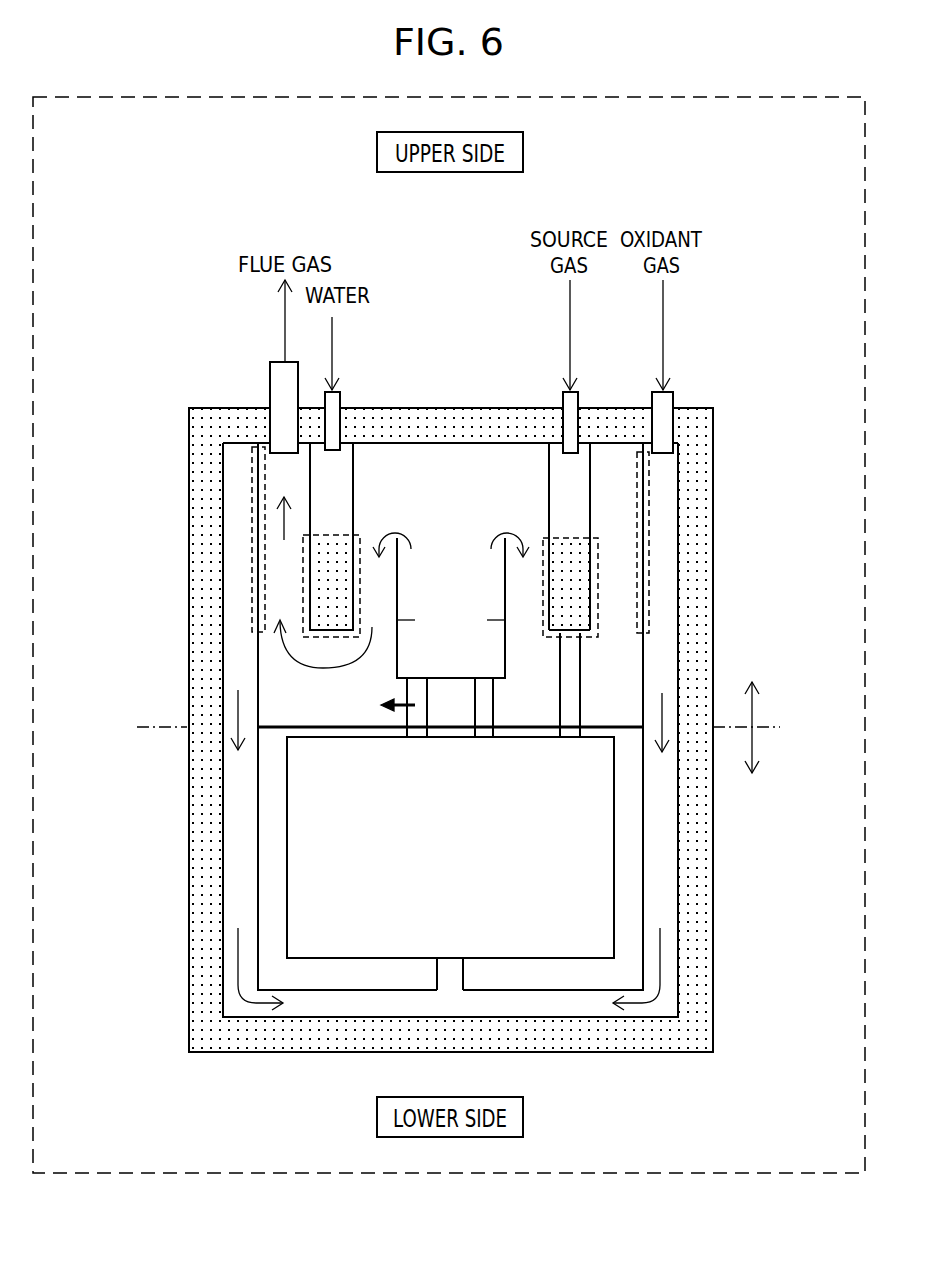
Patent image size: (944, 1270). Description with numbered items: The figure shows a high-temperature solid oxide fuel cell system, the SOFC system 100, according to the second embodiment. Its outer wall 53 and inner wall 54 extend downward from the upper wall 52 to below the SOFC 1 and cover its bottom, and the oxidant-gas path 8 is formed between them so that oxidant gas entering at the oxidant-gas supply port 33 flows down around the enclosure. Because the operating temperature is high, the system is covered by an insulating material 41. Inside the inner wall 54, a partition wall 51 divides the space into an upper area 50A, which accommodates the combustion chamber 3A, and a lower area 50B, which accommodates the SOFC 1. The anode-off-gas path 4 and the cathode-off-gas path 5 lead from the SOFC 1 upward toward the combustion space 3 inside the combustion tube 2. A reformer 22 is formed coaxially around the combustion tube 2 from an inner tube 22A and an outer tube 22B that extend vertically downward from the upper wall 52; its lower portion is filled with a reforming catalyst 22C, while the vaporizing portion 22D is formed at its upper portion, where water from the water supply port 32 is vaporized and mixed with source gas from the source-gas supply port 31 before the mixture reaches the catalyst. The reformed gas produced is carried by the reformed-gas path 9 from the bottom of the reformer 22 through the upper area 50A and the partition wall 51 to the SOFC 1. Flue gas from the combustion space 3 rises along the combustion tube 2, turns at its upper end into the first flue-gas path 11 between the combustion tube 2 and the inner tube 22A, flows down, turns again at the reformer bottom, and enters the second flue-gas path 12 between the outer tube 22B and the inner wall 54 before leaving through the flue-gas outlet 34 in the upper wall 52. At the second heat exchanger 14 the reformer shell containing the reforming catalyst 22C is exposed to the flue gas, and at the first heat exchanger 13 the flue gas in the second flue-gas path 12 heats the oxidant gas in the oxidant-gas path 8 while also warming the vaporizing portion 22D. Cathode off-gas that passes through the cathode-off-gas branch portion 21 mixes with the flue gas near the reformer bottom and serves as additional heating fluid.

The SOFC system 100 is at (480, 221).
The SOFC 1 is at (460, 862).
The combustion tube 2 is at (397, 573).
The combustion space 3 is at (460, 665).
The combustion chamber 3A is at (507, 647).
The anode-off-gas path 4 is at (493, 708).
The cathode-off-gas path 5 is at (392, 694).
The oxidant-gas path 8 is at (671, 683).
The reformed-gas path 9 is at (580, 695).
The first flue-gas path 11 is at (390, 597).
The second flue-gas path 12 is at (297, 597).
The first heat exchanger 13 is at (250, 521).
The second heat exchanger 14 is at (305, 560).
The cathode-off-gas branch portion 21 is at (407, 707).
The reformer 22 is at (310, 488).
The inner tube 22A is at (549, 497).
The outer tube 22B is at (590, 497).
The reforming catalyst 22C is at (586, 597).
The vaporizing portion 22D is at (587, 518).
The source-gas supply port 31 is at (562, 400).
The water supply port 32 is at (340, 390).
The oxidant-gas supply port 33 is at (673, 400).
The flue-gas outlet 34 is at (270, 407).
The insulating material 41 is at (218, 790).
The upper area 50A is at (747, 689).
The lower area 50B is at (747, 767).
The partition wall 51 is at (603, 727).
The upper wall 52 is at (472, 430).
The outer wall 53 is at (680, 545).
The inner wall 54 is at (645, 546).